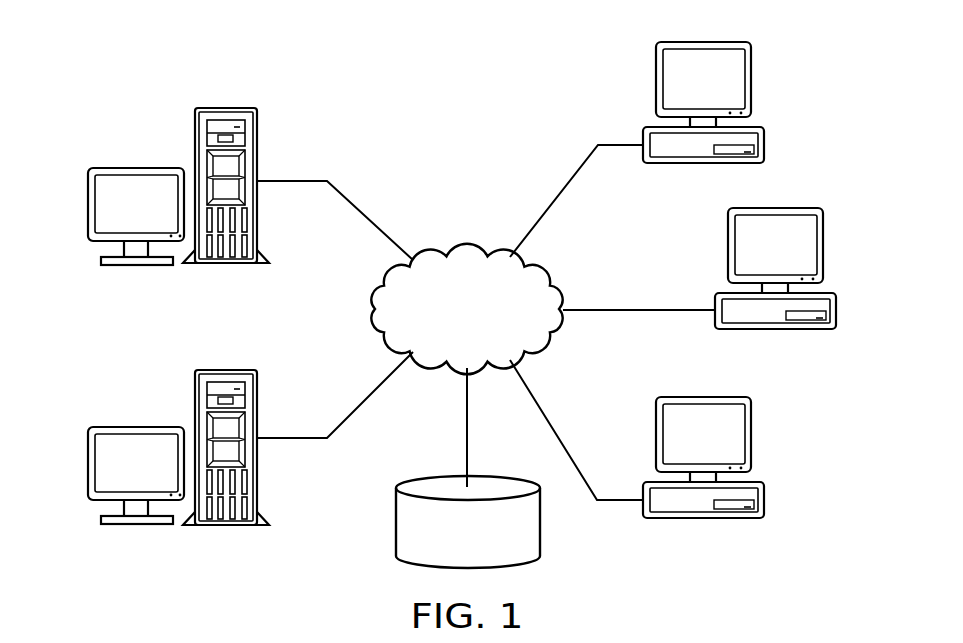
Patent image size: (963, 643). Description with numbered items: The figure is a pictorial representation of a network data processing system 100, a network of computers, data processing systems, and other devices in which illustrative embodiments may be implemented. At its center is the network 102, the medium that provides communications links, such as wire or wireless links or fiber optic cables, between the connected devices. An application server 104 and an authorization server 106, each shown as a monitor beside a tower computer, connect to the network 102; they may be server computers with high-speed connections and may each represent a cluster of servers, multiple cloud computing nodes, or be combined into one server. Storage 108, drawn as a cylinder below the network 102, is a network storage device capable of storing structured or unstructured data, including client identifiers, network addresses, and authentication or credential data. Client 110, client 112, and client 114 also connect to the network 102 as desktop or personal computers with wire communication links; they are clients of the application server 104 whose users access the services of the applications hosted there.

The network data processing system 100 is at (334, 93).
The network 102 is at (438, 257).
The application server 104 is at (88, 205).
The authorization server 106 is at (88, 465).
The storage 108 is at (396, 520).
The client 110 is at (764, 133).
The client 112 is at (834, 318).
The client 114 is at (764, 508).